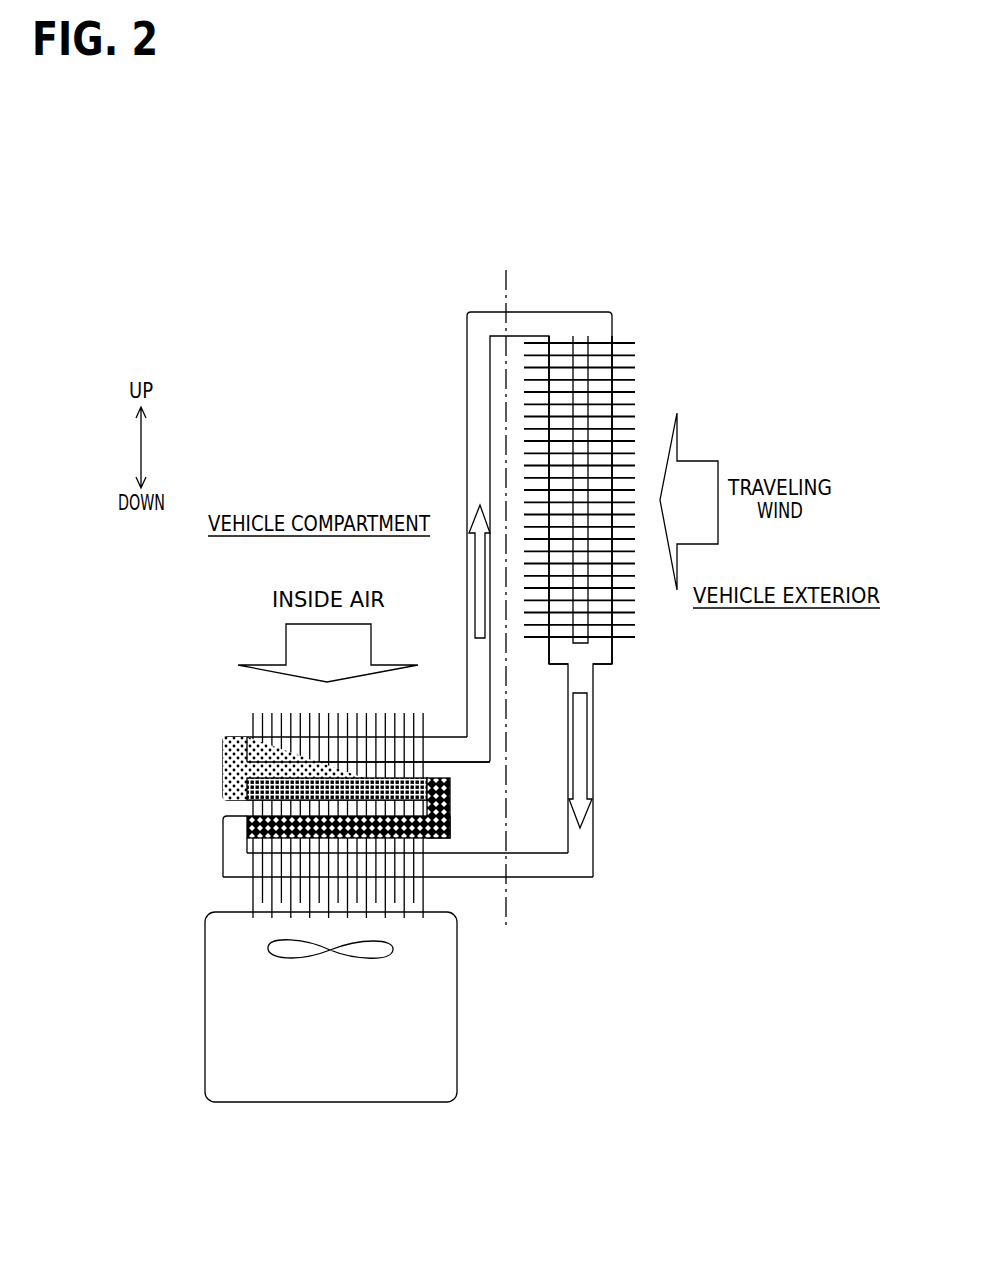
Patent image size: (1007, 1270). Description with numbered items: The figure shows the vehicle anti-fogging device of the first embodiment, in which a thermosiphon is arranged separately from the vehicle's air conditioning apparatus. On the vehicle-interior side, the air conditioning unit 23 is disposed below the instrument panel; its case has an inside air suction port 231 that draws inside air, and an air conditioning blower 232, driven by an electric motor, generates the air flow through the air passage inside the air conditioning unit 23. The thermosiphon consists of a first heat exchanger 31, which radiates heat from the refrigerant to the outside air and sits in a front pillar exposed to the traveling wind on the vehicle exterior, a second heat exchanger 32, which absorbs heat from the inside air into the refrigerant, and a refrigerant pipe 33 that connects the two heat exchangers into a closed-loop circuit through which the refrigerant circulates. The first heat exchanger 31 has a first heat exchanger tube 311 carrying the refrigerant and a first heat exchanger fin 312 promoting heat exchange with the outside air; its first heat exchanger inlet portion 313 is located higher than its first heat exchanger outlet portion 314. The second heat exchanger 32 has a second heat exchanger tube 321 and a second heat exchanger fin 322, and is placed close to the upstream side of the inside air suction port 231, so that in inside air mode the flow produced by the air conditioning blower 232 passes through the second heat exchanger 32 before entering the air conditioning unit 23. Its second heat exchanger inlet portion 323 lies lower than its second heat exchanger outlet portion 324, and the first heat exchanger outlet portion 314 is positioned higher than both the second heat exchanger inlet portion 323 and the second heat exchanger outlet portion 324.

The air conditioning unit 23 is at (196, 1051).
The inside air suction port 231 is at (263, 915).
The air conditioning blower 232 is at (287, 957).
The first heat exchanger 31 is at (743, 283).
The first heat exchanger tube 311 is at (598, 387).
The first heat exchanger fin 312 is at (622, 342).
The first heat exchanger inlet portion 313 is at (563, 320).
The first heat exchanger outlet portion 314 is at (600, 652).
The second heat exchanger 32 is at (117, 785).
The second heat exchanger tube 321 is at (245, 784).
The second heat exchanger fin 322 is at (248, 846).
The second heat exchanger inlet portion 323 is at (483, 880).
The second heat exchanger outlet portion 324 is at (440, 745).
The refrigerant pipe 33 is at (480, 407).